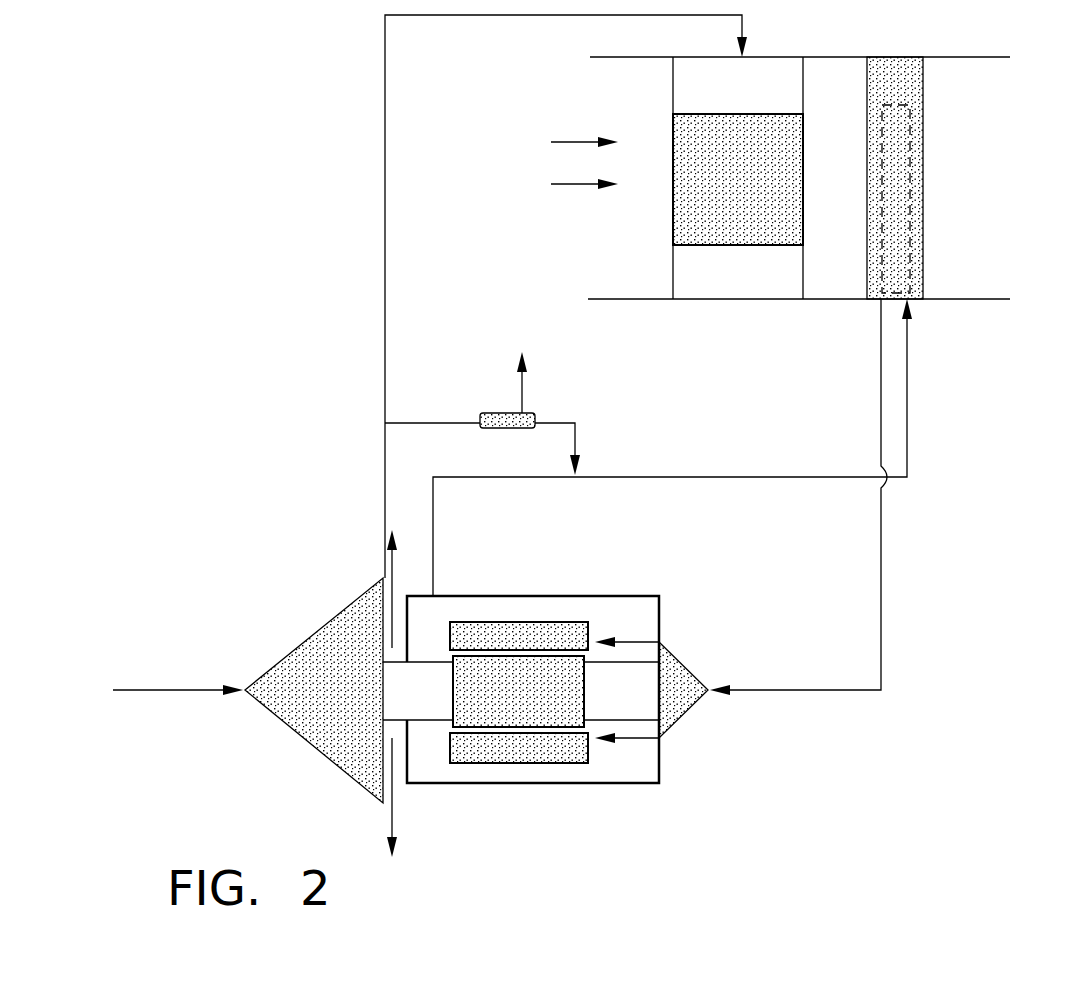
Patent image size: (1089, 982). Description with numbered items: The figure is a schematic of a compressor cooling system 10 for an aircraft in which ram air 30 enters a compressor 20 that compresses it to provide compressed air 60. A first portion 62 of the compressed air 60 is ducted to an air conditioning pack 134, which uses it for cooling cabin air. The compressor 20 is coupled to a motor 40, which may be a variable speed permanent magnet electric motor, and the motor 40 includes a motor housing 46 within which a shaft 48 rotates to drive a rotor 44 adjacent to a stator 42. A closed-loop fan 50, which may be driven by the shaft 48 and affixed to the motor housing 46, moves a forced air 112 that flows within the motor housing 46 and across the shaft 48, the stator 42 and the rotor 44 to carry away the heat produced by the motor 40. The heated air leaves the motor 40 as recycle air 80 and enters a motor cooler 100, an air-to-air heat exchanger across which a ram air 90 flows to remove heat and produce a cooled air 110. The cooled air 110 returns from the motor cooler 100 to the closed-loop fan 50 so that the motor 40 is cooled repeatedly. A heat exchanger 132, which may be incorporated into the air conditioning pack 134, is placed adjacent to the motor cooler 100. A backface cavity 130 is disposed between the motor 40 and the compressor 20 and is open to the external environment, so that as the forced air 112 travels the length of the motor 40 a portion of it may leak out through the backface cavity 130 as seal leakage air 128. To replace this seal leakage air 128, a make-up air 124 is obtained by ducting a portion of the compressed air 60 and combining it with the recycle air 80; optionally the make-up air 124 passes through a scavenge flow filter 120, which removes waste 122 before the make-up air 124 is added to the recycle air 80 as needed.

The compressor cooling system 10 is at (815, 765).
The compressor 20 is at (317, 702).
The ram air 30 is at (168, 688).
The motor 40 is at (586, 701).
The stator 42 is at (503, 650).
The rotor 44 is at (502, 703).
The motor housing 46 is at (533, 593).
The shaft 48 is at (632, 685).
The closed-loop fan 50 is at (664, 702).
The compressed air 60 is at (383, 487).
The first portion of compressed air 62 is at (383, 297).
The recycle air 80 is at (434, 525).
The ram air 90 is at (573, 140).
The motor cooler 100 is at (920, 173).
The cooled air 110 is at (880, 400).
The forced air 112 is at (643, 663).
The scavenge flow filter 120 is at (497, 412).
The waste 122 is at (525, 395).
The make-up air 124 is at (407, 422).
The seal leakage air 128 is at (395, 800).
The backface cavity 130 is at (392, 727).
The heat exchanger 132 is at (721, 195).
The air conditioning pack 134 is at (762, 88).